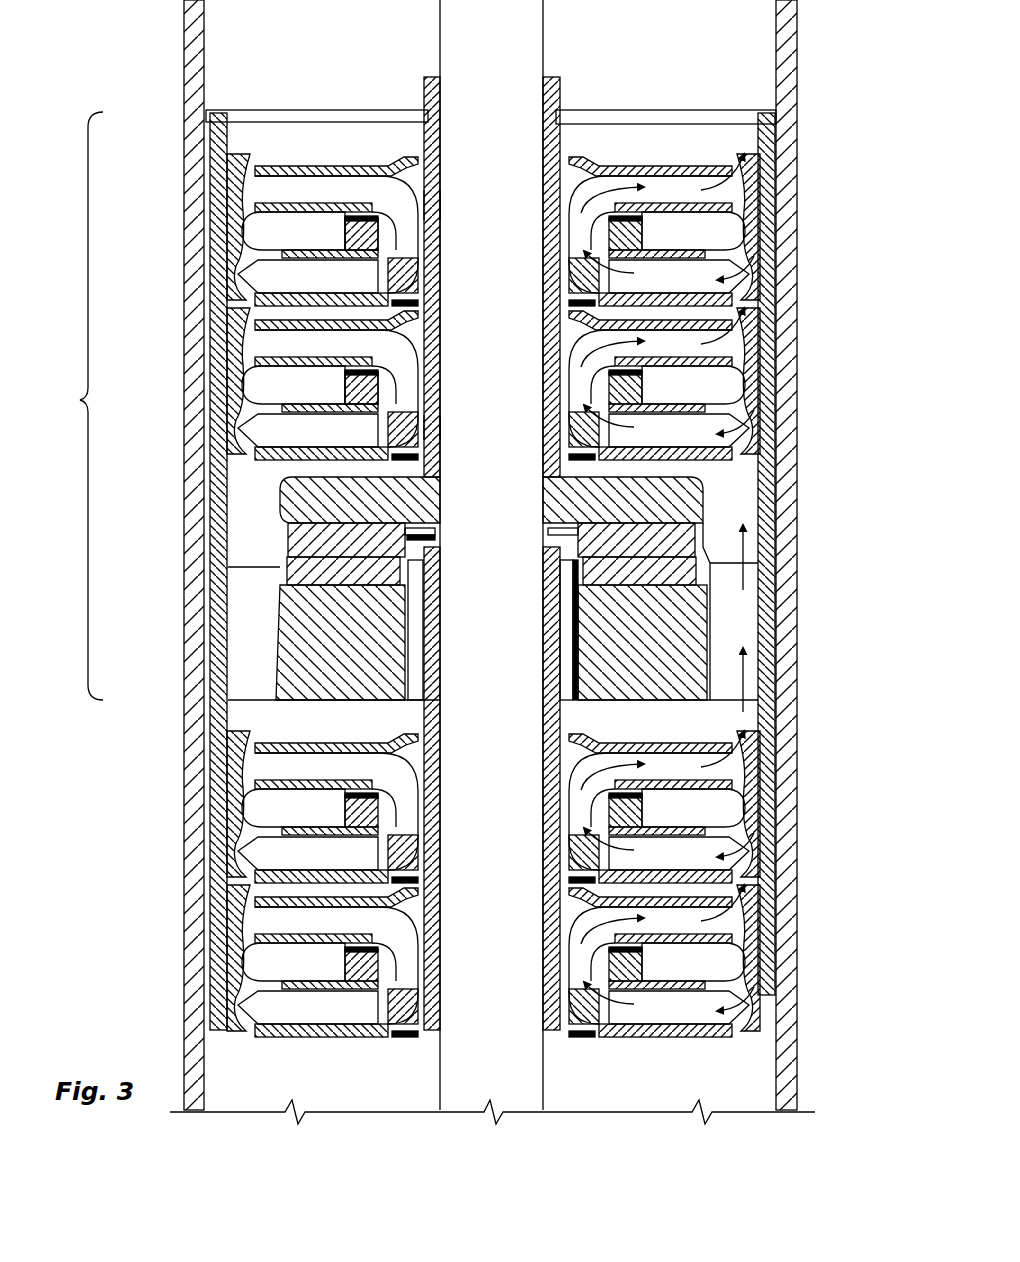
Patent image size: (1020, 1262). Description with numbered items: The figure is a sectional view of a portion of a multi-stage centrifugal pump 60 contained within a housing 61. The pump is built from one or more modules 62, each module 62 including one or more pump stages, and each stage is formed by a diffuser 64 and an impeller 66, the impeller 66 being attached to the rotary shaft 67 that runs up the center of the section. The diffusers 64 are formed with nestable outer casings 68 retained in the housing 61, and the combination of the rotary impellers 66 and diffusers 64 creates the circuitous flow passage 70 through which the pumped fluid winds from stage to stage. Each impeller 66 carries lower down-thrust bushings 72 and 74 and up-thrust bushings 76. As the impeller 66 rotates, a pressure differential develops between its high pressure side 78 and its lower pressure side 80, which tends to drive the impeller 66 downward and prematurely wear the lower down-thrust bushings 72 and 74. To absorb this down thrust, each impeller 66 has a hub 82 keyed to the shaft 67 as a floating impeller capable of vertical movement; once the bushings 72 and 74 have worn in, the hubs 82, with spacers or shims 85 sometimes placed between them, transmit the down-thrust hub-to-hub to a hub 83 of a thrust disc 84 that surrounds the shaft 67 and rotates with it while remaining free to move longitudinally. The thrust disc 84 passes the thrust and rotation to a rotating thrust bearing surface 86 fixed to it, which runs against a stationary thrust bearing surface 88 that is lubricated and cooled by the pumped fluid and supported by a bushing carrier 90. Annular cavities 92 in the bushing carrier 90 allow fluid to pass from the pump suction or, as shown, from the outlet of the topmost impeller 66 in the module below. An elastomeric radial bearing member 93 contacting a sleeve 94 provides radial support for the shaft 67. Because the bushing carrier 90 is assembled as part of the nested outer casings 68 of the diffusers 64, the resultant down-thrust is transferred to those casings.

The multi-stage centrifugal pump 60 is at (806, 128).
The housing 61 is at (800, 43).
The module 62 is at (66, 406).
The diffuser 64 is at (405, 283).
The impeller 66 is at (237, 277).
The rotary shaft 67 is at (527, 33).
The nestable outer casing 68 is at (763, 195).
The circuitous flow passage 70 is at (740, 298).
The lower down-thrust bushing 72 is at (416, 170).
The lower down-thrust bushing 74 is at (430, 226).
The up-thrust bushing 76 is at (410, 150).
The high pressure side 78 is at (237, 182).
The lower pressure side 80 is at (402, 382).
The hub 82 is at (430, 117).
The hub 83 is at (434, 428).
The thrust disc 84 is at (408, 497).
The spacer 85 is at (432, 205).
The thrust bearing surface 86 is at (385, 540).
The stationary thrust bearing surface 88 is at (393, 572).
The bushing carrier 90 is at (552, 712).
The annular cavity 92 is at (248, 667).
The elastomeric radial bearing member 93 is at (420, 680).
The sleeve 94 is at (436, 613).